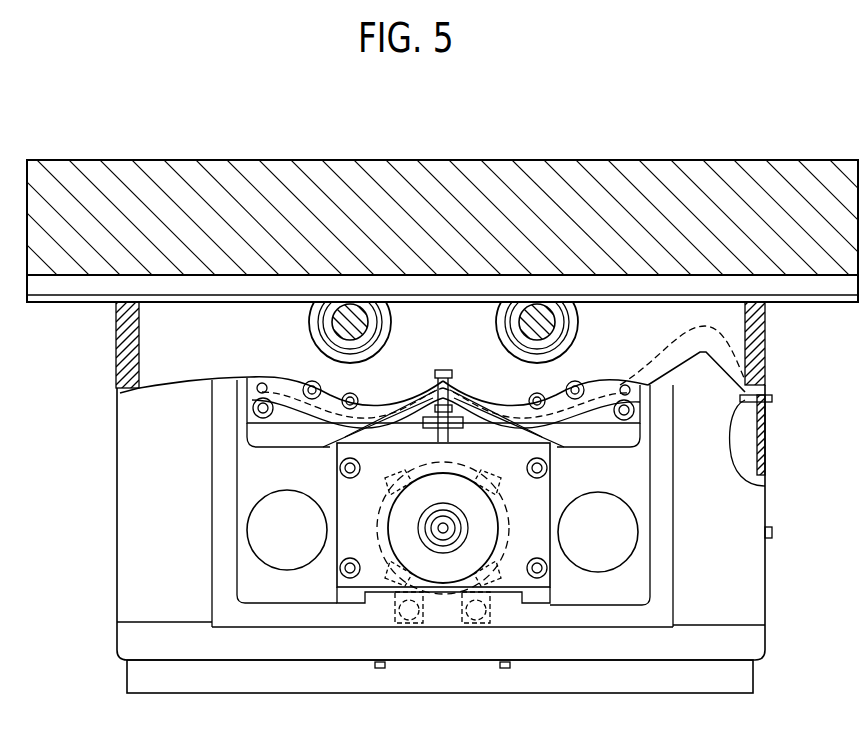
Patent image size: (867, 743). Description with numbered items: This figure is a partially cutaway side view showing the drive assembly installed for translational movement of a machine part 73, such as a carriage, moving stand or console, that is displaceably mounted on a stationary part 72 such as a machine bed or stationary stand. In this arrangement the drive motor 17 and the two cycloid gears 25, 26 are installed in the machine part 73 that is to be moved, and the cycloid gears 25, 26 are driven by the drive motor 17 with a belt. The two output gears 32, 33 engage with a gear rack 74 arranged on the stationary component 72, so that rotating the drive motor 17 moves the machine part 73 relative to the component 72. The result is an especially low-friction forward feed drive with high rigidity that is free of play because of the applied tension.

The stationary part 72 is at (610, 205).
The gear rack 74 is at (216, 300).
The machine part 73 is at (132, 333).
The output gear 32 is at (332, 322).
The output gear 33 is at (548, 322).
The cycloid gear 25 is at (326, 393).
The cycloid gear 26 is at (555, 395).
The drive motor 17 is at (413, 563).